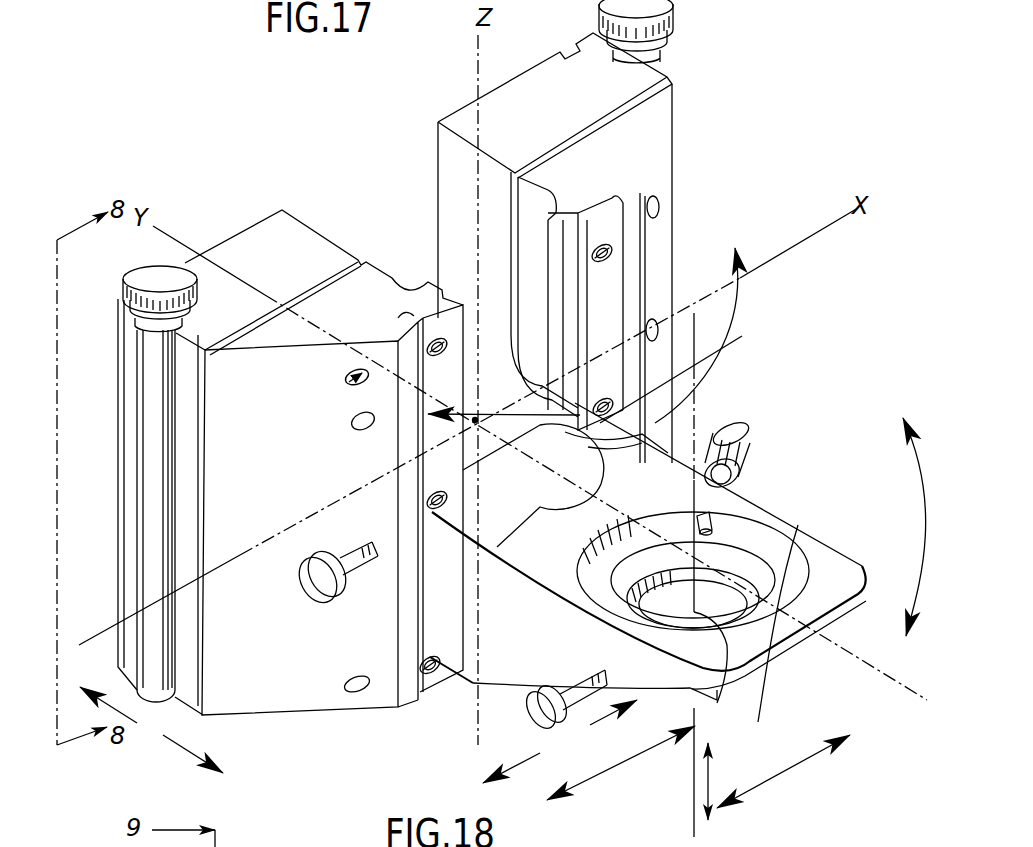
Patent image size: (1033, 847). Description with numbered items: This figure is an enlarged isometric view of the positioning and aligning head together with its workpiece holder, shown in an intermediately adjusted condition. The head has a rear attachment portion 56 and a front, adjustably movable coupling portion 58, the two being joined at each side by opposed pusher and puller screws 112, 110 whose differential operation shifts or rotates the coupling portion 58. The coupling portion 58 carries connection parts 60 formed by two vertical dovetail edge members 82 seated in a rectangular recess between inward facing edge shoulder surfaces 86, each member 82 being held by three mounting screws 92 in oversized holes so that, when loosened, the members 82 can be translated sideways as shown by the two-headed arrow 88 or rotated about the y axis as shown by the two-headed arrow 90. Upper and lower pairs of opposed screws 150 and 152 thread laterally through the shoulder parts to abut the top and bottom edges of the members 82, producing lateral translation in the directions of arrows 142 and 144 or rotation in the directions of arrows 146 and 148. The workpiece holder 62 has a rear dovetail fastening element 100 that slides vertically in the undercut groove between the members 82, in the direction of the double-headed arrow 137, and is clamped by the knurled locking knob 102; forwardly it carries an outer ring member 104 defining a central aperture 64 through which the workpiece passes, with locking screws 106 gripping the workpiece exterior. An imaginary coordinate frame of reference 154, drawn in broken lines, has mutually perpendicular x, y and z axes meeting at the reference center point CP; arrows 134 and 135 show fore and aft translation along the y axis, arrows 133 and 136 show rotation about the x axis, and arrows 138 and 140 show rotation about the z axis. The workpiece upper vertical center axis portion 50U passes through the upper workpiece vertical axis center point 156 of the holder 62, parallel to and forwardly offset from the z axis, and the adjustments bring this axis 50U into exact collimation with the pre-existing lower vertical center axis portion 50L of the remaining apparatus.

The rear attachment portion 56 is at (683, 68).
The coupling portion 58 is at (684, 149).
The connection portion 60 is at (454, 297).
The workpiece holder 62 is at (749, 482).
The central aperture 64 is at (714, 604).
The dovetail edge members 82 is at (612, 280).
The edge shoulder surfaces 86 is at (406, 313).
The two-headed arrow 88 is at (617, 773).
The two-headed arrow 90 is at (862, 563).
The mounting screws 92 is at (613, 248).
The dovetail fastening element 100 is at (670, 452).
The locking knob 102 is at (320, 588).
The outer ring member 104 is at (664, 606).
The locking screws 106 is at (535, 713).
The puller screw 110 is at (305, 846).
The pusher screw 112 is at (246, 846).
The directional arrow 133 is at (783, 777).
The directional arrow 134 is at (168, 738).
The directional arrow 135 is at (99, 699).
The directional arrow 136 is at (926, 484).
The double-headed arrow 137 is at (710, 777).
The directional arrow 138 is at (420, 445).
The directional arrow 140 is at (750, 307).
The directional arrow 142 is at (540, 753).
The directional arrow 144 is at (598, 720).
The directional arrow 146 is at (912, 637).
The directional arrow 148 is at (851, 733).
The upper movement causing screws 150 is at (345, 377).
The lower movement causing screws 152 is at (343, 688).
The imaginary coordinate frame of reference 154 is at (790, 242).
The upper workpiece vertical axis center point 156 is at (717, 703).
The upper vertical center axis portion 50U is at (705, 374).
The lower vertical center axis portion 50L is at (690, 806).
The reference center point CP is at (476, 418).